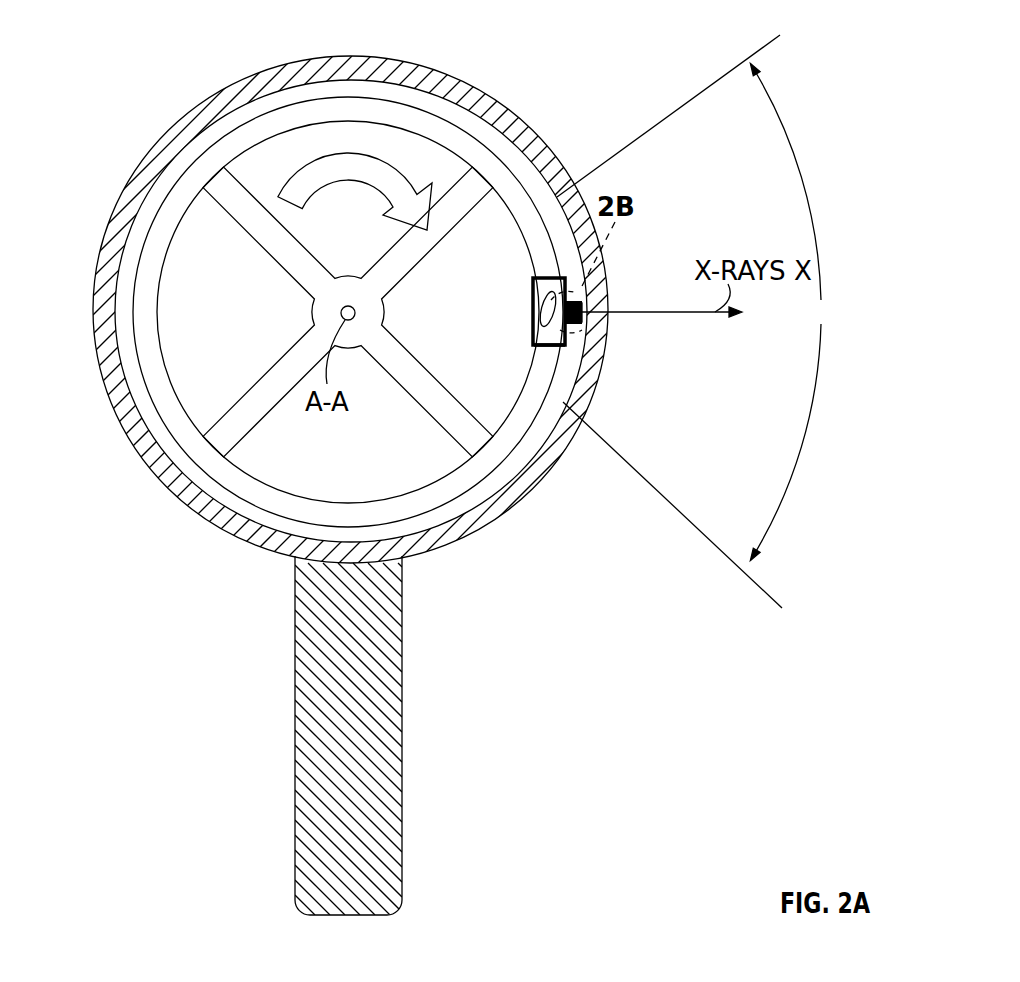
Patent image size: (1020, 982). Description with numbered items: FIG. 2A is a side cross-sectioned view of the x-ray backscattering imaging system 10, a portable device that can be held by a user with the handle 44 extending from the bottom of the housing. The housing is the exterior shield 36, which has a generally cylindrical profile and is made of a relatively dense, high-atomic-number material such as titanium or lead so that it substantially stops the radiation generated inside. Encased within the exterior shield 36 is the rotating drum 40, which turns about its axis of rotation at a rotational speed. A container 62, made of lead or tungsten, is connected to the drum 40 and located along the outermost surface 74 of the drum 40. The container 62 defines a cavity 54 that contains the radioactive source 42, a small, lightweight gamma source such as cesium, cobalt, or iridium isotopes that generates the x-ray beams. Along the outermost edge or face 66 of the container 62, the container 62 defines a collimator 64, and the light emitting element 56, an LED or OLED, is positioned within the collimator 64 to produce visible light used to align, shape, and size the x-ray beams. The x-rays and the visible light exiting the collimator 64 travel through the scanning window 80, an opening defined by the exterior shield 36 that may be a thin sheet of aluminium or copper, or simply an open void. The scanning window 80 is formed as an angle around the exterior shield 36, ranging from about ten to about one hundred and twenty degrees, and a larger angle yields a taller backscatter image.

The x-ray backscattering imaging system 10 is at (113, 41).
The exterior shield 36 is at (327, 56).
The rotating drum 40 is at (208, 180).
The radioactive source 42 is at (541, 318).
The handle 44 is at (352, 755).
The cavity 54 is at (538, 341).
The light emitting element 56 is at (584, 310).
The container 62 is at (533, 290).
The collimator 64 is at (587, 301).
The outermost edge or face 66 is at (564, 338).
The outermost surface 74 is at (433, 510).
The scanning window 80 is at (565, 402).